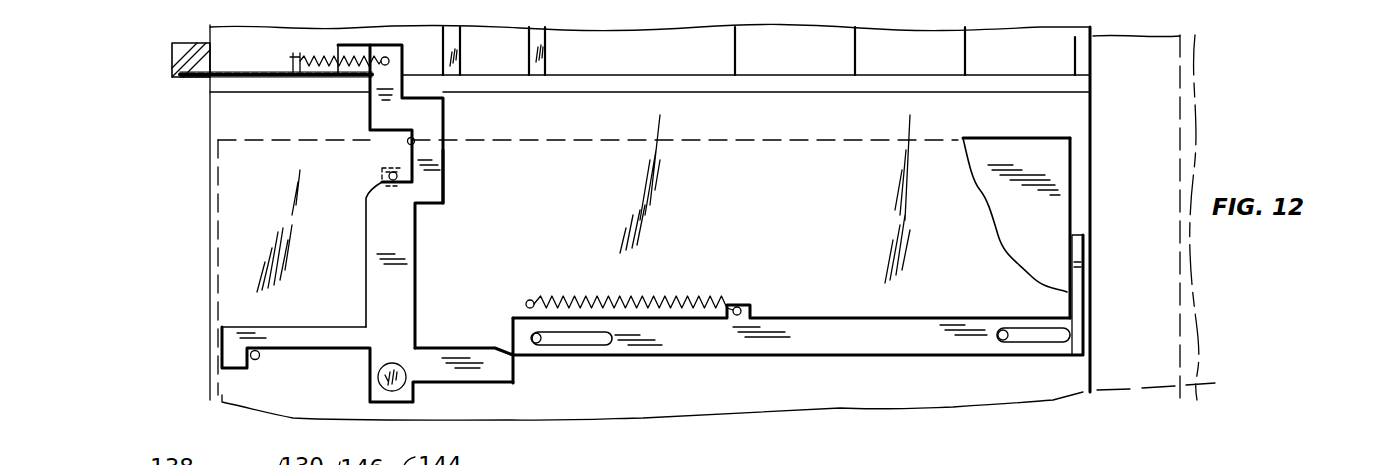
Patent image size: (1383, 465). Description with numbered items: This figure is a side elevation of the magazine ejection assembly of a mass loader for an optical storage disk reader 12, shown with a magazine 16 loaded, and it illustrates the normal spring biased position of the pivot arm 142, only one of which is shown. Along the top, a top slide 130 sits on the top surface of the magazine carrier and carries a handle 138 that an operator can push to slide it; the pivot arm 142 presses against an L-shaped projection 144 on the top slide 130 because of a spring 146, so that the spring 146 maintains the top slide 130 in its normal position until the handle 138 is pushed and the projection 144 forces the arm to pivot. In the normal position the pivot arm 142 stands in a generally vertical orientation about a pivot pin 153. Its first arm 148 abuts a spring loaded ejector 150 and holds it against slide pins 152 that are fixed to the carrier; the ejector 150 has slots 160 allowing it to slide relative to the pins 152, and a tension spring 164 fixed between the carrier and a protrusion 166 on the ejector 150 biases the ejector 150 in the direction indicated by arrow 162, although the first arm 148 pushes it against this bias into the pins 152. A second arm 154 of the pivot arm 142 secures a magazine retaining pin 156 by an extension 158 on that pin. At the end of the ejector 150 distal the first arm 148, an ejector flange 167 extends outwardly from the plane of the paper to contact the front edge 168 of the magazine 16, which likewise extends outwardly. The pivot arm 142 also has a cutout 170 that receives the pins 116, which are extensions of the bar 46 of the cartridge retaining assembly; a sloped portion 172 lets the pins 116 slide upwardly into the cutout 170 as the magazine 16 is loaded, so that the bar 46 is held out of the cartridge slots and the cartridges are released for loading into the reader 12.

The optical storage disk reader 12 is at (1196, 386).
The magazine 16 is at (727, 134).
The bar 46 is at (383, 163).
The pins 116 is at (389, 177).
The top slide 130 is at (232, 77).
The handle 138 is at (183, 77).
The pivot arm 142 is at (443, 192).
The L-shaped projection 144 is at (372, 47).
The spring 146 is at (326, 76).
The first arm 148 is at (515, 382).
The ejector 150 is at (818, 343).
The slide pins 152 is at (532, 335).
The pivot pin 153 is at (404, 368).
The second arm 154 is at (347, 326).
The magazine retaining pin 156 is at (254, 361).
The extension 158 is at (222, 336).
The slots 160 is at (588, 340).
The arrow 162 is at (693, 263).
The tension spring 164 is at (602, 300).
The protrusion 166 is at (741, 304).
The ejector flange 167 is at (1084, 283).
The front edge 168 is at (1072, 222).
The cutout 170 is at (413, 142).
The sloped portion 172 is at (362, 254).